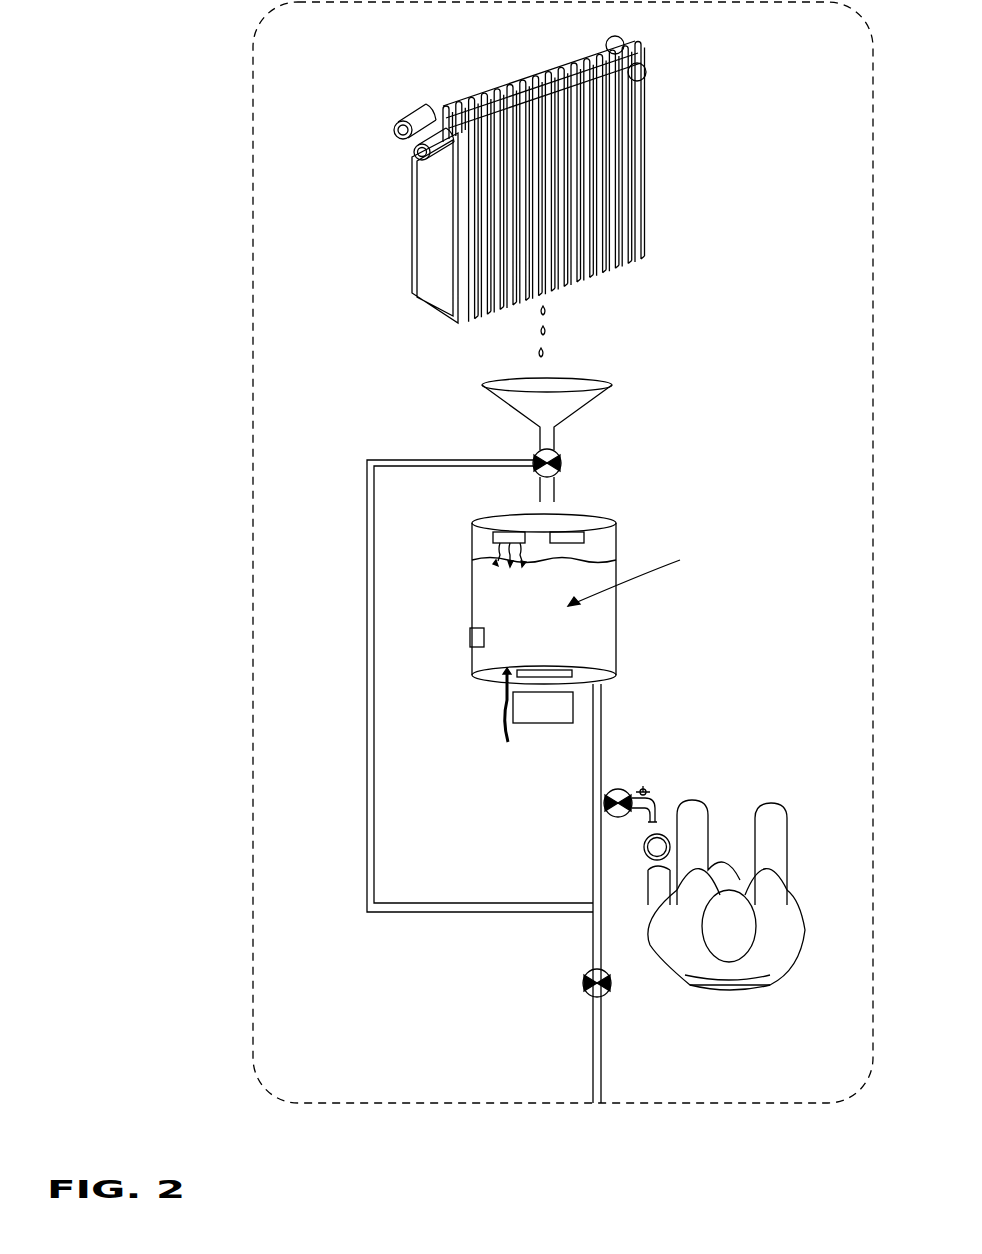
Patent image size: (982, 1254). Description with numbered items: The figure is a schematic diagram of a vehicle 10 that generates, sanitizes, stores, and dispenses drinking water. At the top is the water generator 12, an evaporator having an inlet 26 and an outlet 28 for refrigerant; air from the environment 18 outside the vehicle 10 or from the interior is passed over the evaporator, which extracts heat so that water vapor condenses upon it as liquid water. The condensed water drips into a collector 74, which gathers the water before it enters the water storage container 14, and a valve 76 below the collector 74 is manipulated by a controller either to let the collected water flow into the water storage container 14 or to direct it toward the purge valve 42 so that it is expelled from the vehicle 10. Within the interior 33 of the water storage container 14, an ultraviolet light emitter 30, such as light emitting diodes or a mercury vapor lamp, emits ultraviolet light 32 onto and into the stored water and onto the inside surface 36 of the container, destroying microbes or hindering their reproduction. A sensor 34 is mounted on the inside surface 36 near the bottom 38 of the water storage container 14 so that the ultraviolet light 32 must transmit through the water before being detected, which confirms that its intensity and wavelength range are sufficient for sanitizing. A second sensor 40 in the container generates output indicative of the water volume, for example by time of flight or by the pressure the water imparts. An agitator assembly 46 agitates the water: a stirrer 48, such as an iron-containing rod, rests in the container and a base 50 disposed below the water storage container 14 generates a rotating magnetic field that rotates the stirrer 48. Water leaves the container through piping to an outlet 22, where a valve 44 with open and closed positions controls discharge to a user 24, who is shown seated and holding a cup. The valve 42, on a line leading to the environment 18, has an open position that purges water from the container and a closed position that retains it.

The vehicle 10 is at (253, 435).
The water generator 12 is at (495, 88).
The water storage container 14 is at (472, 601).
The environment 18 is at (222, 225).
The outlet 22 is at (655, 808).
The user 24 is at (775, 925).
The inlet 26 is at (396, 128).
The outlet 28 is at (416, 156).
The ultraviolet light emitter 30 is at (493, 536).
The ultraviolet light 32 is at (493, 549).
The interior 33 is at (639, 569).
The sensor 34 is at (484, 647).
The inside surface 36 is at (608, 628).
The bottom 38 is at (490, 676).
The sensor 40 is at (555, 536).
The valve 42 is at (597, 996).
The valve 44 is at (618, 790).
The agitator assembly 46 is at (507, 708).
The stirrer 48 is at (538, 668).
The base 50 is at (538, 724).
The collector 74 is at (503, 403).
The valve 76 is at (562, 462).